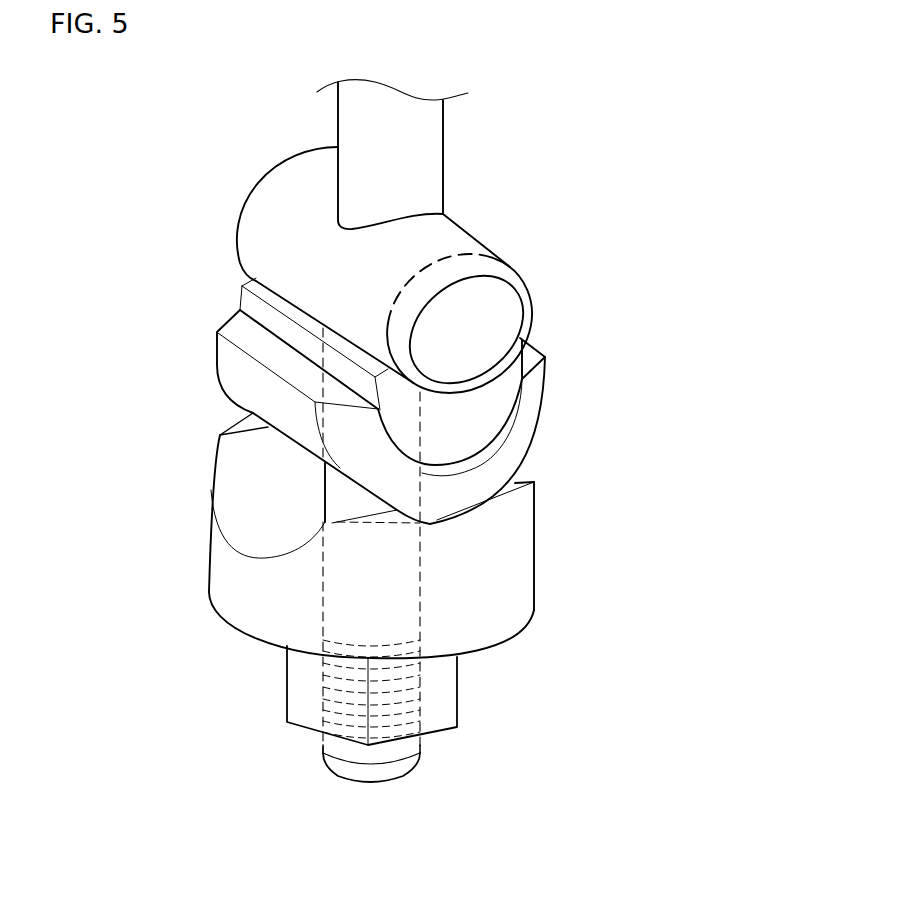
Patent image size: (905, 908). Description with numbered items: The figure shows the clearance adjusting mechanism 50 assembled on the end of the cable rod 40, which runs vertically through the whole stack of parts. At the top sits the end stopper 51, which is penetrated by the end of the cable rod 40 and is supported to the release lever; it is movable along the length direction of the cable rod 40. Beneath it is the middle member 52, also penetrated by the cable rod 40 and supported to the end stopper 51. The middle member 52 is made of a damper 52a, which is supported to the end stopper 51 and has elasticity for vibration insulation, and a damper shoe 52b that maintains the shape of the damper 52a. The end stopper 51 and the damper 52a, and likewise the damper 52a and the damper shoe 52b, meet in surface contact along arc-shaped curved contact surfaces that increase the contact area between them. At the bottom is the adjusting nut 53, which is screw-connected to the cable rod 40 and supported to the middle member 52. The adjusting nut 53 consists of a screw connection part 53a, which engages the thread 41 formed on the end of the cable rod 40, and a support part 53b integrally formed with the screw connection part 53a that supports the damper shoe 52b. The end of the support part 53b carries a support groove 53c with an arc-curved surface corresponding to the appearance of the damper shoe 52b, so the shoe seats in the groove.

The cable rod 40 is at (430, 152).
The thread 41 is at (338, 690).
The clearance adjusting mechanism 50 is at (522, 260).
The end stopper 51 is at (277, 203).
The middle member 52 is at (545, 400).
The damper 52a is at (475, 408).
The damper shoe 52b is at (248, 376).
The adjusting nut 53 is at (232, 632).
The screw connection part 53a is at (447, 687).
The support part 53b is at (518, 567).
The support groove 53c is at (248, 505).